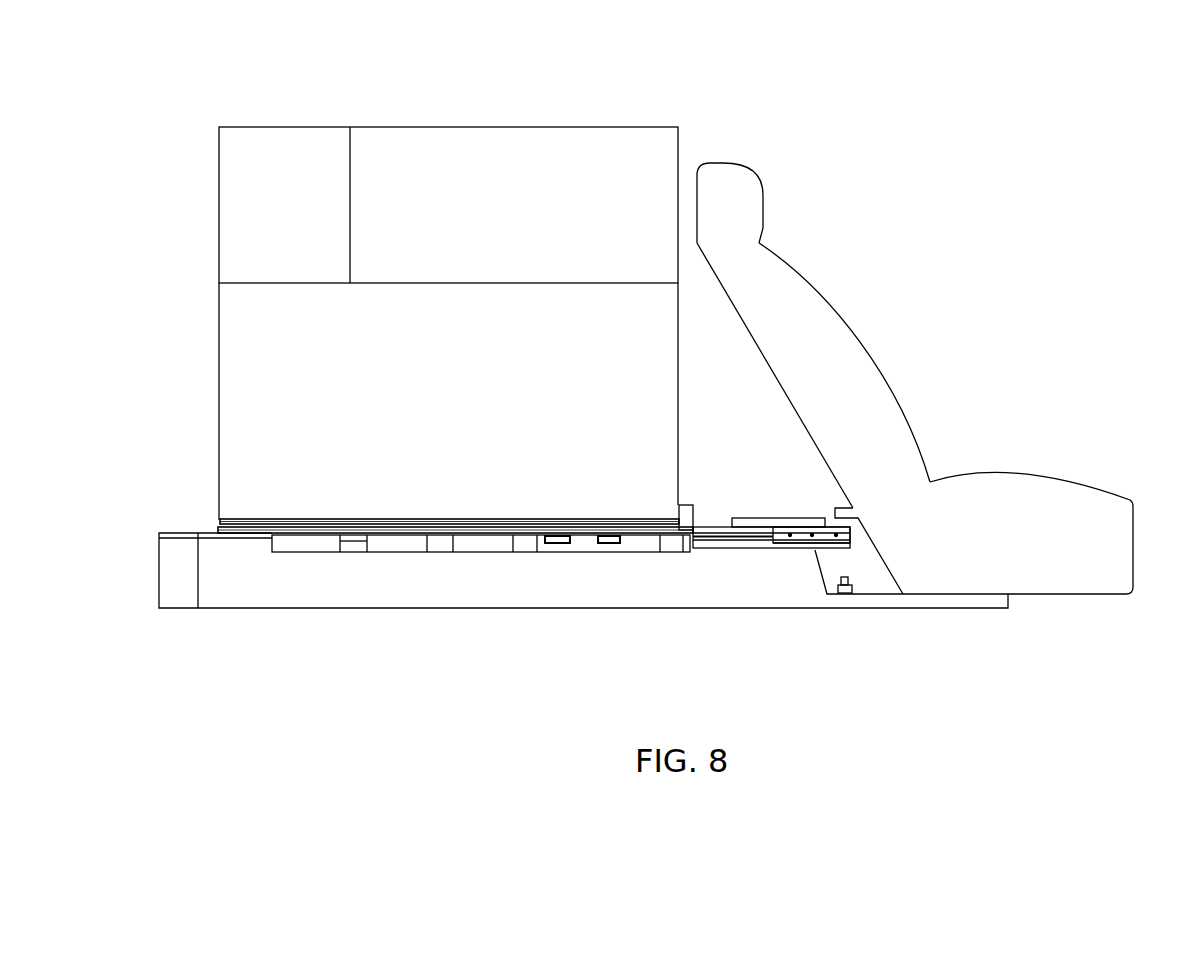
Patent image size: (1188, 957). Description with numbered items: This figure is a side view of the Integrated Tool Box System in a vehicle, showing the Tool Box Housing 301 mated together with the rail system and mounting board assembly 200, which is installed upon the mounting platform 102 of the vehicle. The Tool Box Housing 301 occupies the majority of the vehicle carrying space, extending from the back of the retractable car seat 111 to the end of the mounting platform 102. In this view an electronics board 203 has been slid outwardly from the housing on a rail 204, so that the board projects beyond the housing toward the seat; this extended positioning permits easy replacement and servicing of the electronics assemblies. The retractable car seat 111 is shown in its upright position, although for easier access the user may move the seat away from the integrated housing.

The Tool Box Housing 301 is at (385, 115).
The rail system and mounting board assembly 200 is at (702, 493).
The electronics board 203 is at (790, 518).
The rail 204 is at (853, 532).
The retractable car seat 111 is at (1046, 466).
The mounting platform 102 is at (782, 618).